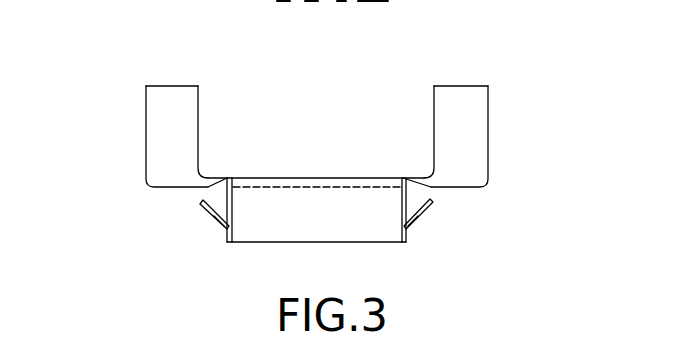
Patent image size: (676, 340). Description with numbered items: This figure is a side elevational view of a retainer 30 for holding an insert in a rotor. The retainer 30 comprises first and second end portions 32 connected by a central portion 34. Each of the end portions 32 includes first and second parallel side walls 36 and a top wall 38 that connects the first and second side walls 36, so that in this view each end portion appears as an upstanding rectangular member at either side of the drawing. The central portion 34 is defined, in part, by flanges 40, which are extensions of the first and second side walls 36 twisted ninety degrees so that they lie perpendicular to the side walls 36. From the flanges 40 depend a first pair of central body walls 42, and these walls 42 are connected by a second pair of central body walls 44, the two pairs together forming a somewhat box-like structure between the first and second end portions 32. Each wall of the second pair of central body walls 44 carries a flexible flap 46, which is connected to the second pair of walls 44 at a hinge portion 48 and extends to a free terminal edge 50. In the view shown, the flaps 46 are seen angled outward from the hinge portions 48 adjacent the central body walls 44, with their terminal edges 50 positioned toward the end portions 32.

The retainer 30 is at (100, 100).
The end portions 32 is at (315, 93).
The central portion 34 is at (312, 252).
The side walls 36 is at (160, 138).
The top wall 38 is at (150, 85).
The flanges 40 is at (238, 176).
The first pair of central body walls 42 is at (279, 224).
The second pair of central body walls 44 is at (318, 240).
The flexible flap 46 is at (213, 229).
The hinge portion 48 is at (228, 241).
The terminal edge 50 is at (312, 224).